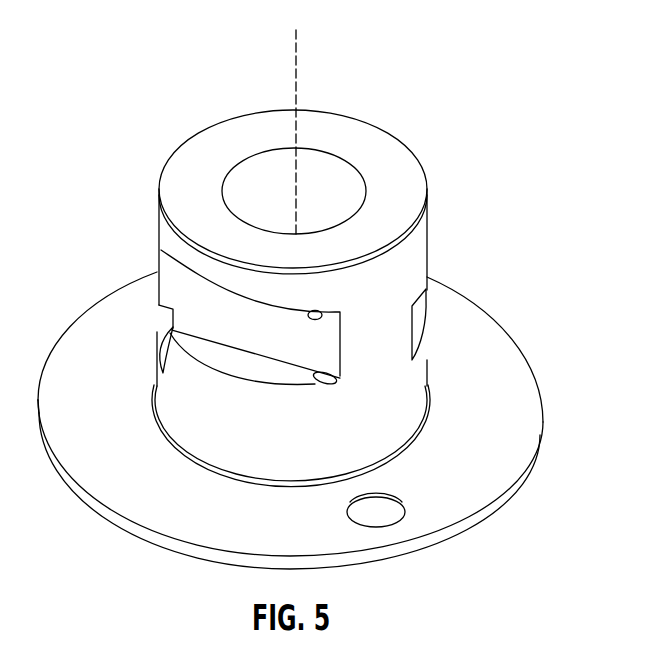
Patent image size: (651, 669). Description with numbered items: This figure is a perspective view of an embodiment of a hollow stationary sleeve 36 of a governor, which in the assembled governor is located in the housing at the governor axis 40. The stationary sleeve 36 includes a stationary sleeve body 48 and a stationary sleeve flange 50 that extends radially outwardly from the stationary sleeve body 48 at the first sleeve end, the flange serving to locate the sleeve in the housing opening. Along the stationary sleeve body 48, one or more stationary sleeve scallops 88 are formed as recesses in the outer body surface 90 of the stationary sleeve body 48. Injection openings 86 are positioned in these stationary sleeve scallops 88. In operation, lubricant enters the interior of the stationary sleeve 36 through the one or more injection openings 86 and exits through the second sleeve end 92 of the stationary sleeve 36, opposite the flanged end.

The stationary sleeve 36 is at (138, 62).
The governor axis 40 is at (298, 61).
The stationary sleeve body 48 is at (415, 369).
The stationary sleeve flange 50 is at (478, 322).
The injection opening 86 is at (309, 318).
The stationary sleeve scallop 88 is at (340, 376).
The outer body surface 90 is at (156, 383).
The second sleeve end 92 is at (323, 177).